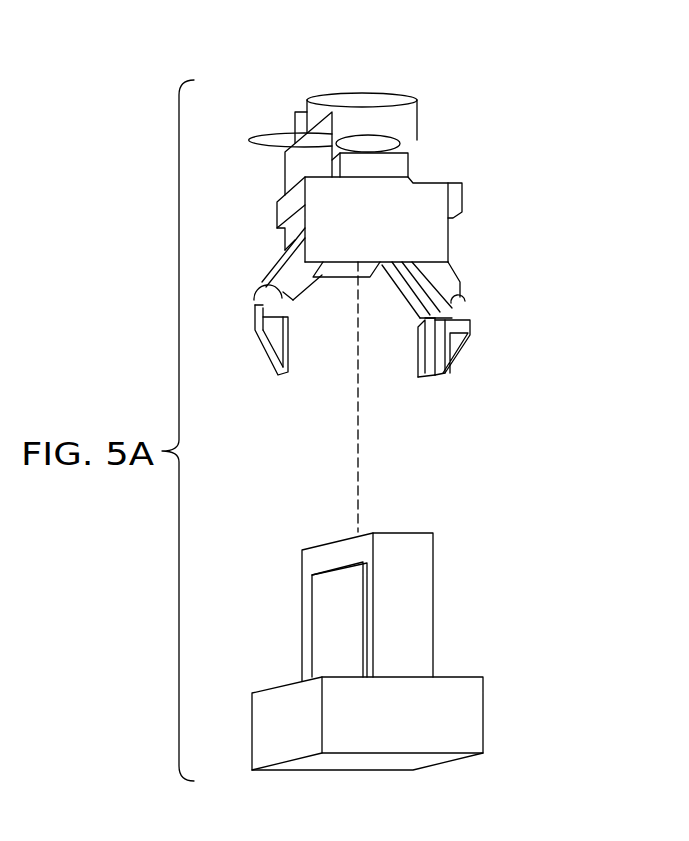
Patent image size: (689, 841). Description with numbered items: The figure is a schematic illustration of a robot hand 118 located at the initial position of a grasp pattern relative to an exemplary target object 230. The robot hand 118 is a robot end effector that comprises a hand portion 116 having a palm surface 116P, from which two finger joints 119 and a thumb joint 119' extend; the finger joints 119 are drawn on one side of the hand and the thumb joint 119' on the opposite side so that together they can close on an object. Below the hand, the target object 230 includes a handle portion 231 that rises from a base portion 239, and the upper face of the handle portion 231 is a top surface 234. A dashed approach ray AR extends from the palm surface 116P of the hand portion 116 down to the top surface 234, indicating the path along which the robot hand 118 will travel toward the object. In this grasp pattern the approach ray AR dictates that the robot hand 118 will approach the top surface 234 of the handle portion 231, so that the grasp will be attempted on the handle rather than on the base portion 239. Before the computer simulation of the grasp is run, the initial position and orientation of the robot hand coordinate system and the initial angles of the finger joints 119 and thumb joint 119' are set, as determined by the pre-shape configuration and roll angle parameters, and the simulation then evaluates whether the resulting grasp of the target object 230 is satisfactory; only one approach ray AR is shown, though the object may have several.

The robot hand 118 is at (362, 260).
The hand portion 116 is at (448, 243).
The palm surface 116P is at (375, 268).
The finger joints 119 is at (467, 367).
The thumb joint 119' is at (247, 325).
The approach ray AR is at (357, 432).
The target object 230 is at (424, 603).
The handle portion 231 is at (428, 557).
The top surface 234 is at (323, 545).
The base portion 239 is at (424, 718).